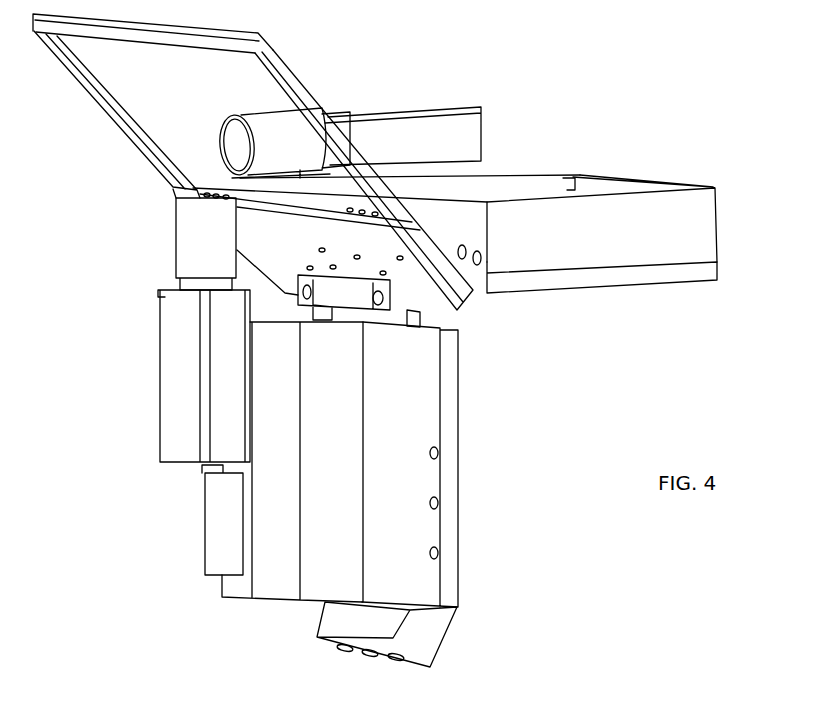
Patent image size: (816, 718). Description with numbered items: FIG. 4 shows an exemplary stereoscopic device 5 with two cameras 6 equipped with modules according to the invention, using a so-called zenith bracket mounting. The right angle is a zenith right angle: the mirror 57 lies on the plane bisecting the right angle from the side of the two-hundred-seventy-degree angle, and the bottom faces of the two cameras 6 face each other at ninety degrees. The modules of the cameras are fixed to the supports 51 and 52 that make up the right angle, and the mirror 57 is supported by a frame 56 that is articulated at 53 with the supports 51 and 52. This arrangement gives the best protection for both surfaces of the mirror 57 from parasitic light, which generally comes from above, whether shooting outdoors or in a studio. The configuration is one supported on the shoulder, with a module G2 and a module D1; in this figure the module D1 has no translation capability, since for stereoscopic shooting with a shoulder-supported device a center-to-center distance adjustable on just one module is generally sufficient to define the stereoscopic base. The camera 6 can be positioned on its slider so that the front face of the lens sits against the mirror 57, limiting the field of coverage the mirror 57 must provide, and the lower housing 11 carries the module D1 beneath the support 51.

The measuring device 5 is at (503, 352).
The camera 6 is at (428, 133).
The drive unit 11 is at (695, 230).
The support 51 is at (402, 502).
The support 52 is at (605, 280).
The articulation 53 is at (420, 316).
The frame 56 is at (297, 82).
The mirror 57 is at (167, 107).
The module D1 is at (227, 528).
The module G2 is at (568, 187).